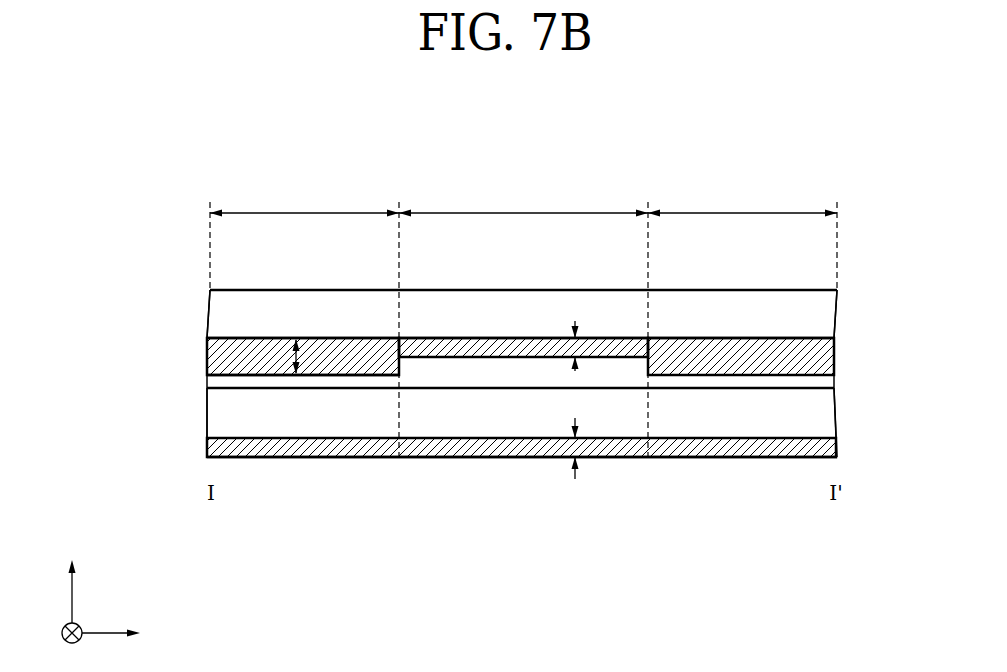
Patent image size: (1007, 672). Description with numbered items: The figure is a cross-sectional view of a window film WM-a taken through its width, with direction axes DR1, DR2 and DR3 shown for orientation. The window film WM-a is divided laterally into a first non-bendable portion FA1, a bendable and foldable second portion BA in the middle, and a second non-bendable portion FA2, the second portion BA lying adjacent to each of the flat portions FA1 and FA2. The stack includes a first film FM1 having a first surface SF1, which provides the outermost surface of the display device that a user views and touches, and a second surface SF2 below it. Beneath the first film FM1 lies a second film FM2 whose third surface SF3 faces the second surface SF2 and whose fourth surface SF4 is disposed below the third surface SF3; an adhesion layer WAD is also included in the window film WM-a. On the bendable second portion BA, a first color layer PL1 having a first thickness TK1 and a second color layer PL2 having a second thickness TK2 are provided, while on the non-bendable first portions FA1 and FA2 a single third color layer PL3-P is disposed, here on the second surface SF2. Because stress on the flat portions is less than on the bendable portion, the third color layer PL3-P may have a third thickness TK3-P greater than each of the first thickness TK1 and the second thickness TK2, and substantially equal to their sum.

The window film WM-a is at (777, 159).
The first non-bendable portion FA1 is at (304, 321).
The second portion BA is at (523, 201).
The second non-bendable portion FA2 is at (742, 321).
The first surface SF1 is at (230, 290).
The second surface SF2 is at (228, 340).
The third surface SF3 is at (228, 388).
The fourth surface SF4 is at (230, 457).
The first film FM1 is at (827, 317).
The second film FM2 is at (827, 419).
The adhesion layer WAD is at (827, 384).
The first color layer PL1 is at (493, 350).
The second color layer PL2 is at (437, 447).
The third color layer PL3-P is at (328, 367).
The first thickness TK1 is at (573, 345).
The second thickness TK2 is at (575, 450).
The third thickness TK3-P is at (273, 337).
The first direction DR1 is at (132, 633).
The second direction DR2 is at (72, 647).
The third direction DR3 is at (73, 578).